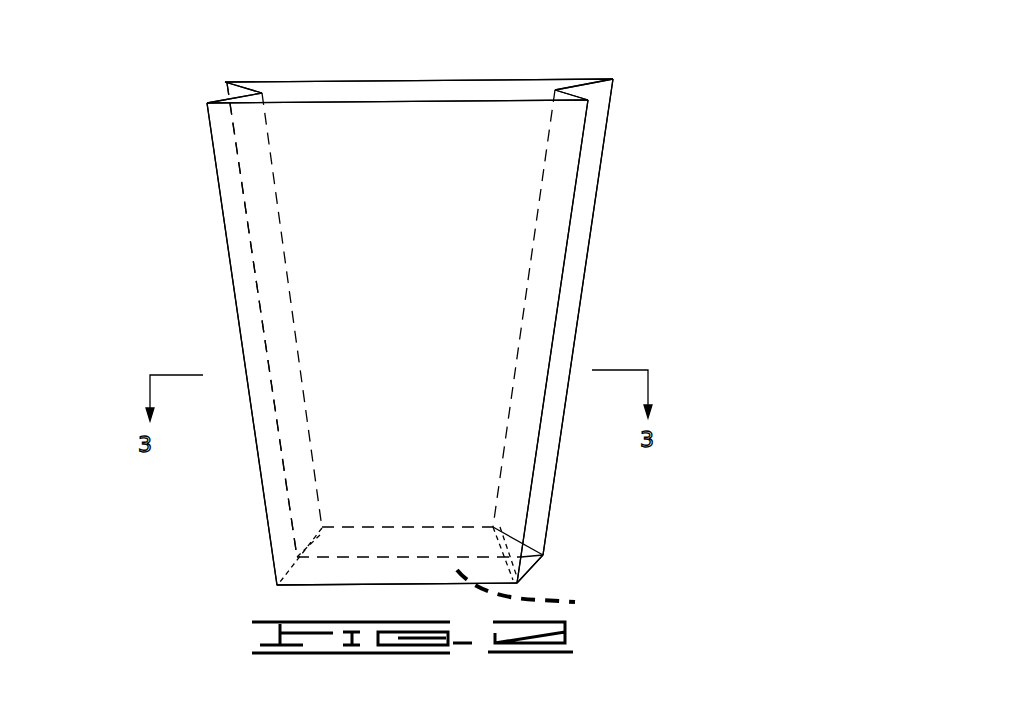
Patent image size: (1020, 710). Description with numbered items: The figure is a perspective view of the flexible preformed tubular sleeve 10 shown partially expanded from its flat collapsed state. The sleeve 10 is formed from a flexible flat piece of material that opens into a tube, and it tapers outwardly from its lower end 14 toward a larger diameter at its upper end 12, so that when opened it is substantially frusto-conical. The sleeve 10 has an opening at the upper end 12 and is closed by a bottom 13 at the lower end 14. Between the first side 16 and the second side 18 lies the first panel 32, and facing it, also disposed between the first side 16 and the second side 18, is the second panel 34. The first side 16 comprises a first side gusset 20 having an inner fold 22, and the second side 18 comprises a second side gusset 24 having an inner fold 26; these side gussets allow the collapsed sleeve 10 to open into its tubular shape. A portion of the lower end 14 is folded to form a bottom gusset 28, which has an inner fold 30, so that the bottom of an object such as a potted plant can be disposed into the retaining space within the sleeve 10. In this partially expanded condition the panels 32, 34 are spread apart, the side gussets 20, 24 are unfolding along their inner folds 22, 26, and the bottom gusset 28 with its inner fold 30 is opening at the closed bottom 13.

The flexible preformed tubular sleeve 10 is at (118, 536).
The upper end 12 is at (490, 71).
The bottom 13 is at (537, 592).
The lower end 14 is at (307, 588).
The first side 16 is at (198, 261).
The second side 18 is at (618, 232).
The first side gusset 20 is at (227, 92).
The inner fold 22 is at (292, 285).
The second side gusset 24 is at (598, 125).
The inner fold 26 is at (525, 290).
The bottom gusset 28 is at (520, 565).
The inner fold 30 is at (357, 525).
The first panel 32 is at (303, 152).
The second panel 34 is at (337, 80).